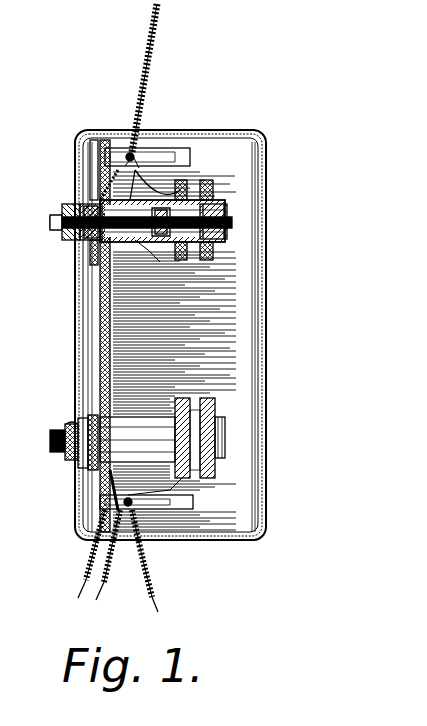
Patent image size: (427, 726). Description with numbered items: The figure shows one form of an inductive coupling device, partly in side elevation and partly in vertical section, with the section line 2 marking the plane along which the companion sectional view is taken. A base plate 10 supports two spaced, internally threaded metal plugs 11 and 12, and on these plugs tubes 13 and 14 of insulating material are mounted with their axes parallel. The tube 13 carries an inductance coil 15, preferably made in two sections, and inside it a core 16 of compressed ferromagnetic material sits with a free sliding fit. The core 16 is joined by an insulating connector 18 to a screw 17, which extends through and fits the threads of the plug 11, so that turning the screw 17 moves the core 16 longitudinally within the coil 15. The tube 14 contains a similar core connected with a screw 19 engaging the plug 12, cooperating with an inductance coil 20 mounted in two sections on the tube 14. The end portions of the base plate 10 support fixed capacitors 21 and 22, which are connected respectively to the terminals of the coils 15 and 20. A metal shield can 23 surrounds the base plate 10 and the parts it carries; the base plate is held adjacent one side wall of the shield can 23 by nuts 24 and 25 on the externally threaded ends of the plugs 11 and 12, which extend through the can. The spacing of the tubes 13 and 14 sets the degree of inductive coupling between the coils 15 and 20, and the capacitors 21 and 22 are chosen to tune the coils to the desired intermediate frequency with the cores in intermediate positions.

The section line 2— 2 is at (245, 610).
The base plate 10 is at (95, 347).
The plug 11 is at (82, 256).
The plug 12 is at (86, 460).
The tube 13 is at (227, 231).
The tube 14 is at (222, 433).
The inductance coil 15 is at (206, 262).
The core 16 is at (226, 207).
The screw 17 is at (60, 216).
The insulating connector 18 is at (158, 236).
The screw 19 is at (50, 441).
The inductance coil 20 is at (207, 398).
The fixed capacitor 21 is at (178, 152).
The fixed capacitor 22 is at (178, 512).
The metal shield can 23 is at (266, 280).
The nut 24 is at (78, 205).
The nut 25 is at (74, 420).